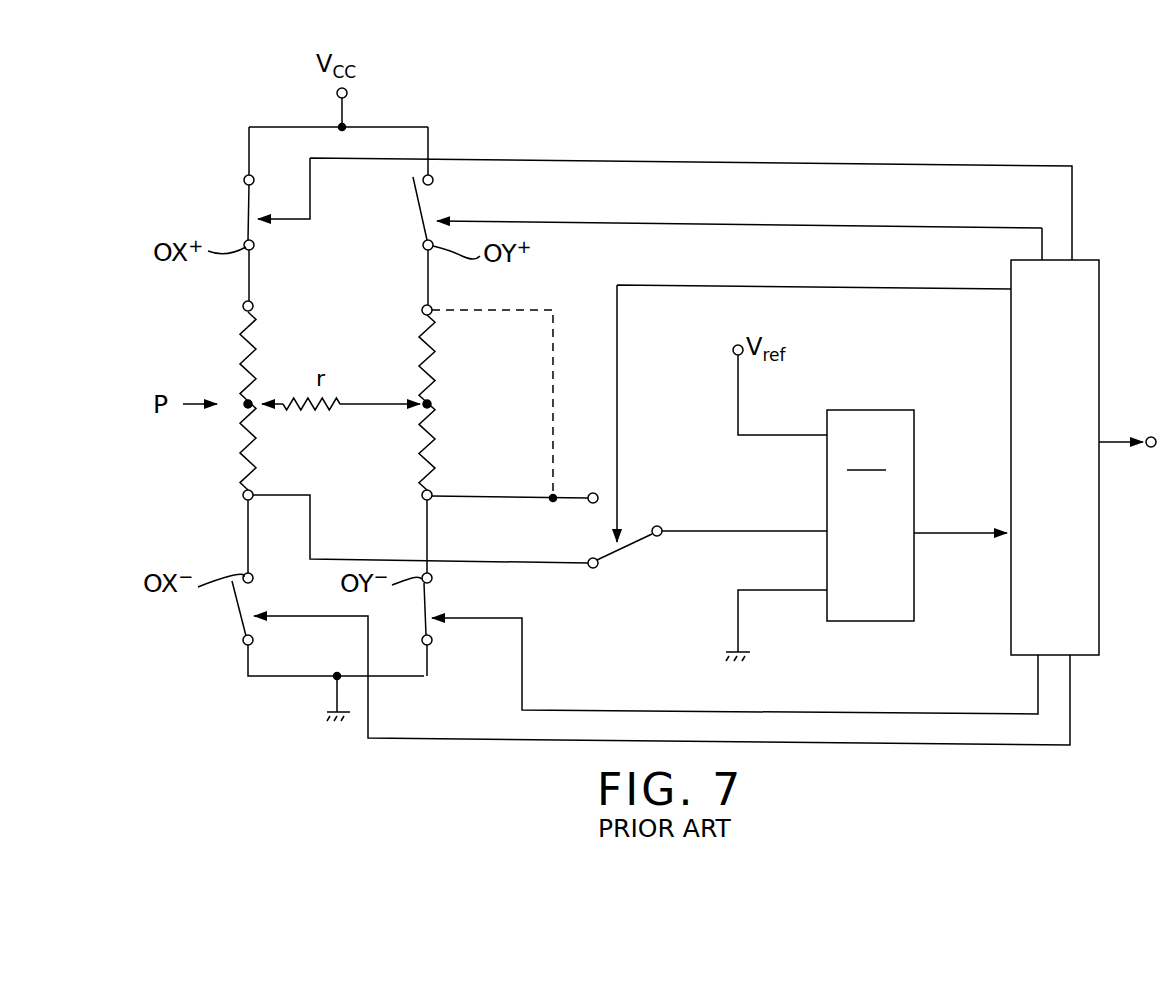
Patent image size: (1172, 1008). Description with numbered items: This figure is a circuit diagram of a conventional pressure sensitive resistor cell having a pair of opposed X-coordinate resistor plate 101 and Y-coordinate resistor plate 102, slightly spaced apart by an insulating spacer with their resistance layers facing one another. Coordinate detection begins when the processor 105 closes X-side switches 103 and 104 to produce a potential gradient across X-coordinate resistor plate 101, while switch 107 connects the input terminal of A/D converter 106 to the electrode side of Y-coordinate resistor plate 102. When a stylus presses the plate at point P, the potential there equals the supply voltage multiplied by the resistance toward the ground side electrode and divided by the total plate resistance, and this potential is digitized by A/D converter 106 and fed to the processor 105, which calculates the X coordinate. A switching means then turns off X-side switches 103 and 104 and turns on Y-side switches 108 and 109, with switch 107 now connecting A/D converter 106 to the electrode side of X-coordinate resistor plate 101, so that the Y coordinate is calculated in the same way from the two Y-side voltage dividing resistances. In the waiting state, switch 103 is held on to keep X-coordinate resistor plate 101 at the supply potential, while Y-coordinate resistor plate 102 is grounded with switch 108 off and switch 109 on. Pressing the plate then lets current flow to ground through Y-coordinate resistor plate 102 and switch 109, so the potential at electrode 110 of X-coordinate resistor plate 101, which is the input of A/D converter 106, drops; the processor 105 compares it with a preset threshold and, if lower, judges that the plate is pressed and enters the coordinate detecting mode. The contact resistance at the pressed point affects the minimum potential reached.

The X-coordinate resistor plate 101 is at (248, 424).
The Y-coordinate resistor plate 102 is at (413, 348).
The X-side switch 103 is at (248, 207).
The X-side switch 104 is at (238, 606).
The CPU 105 is at (1082, 476).
The A/D converter 106 is at (895, 546).
The switch 107 is at (630, 545).
The Y-side switch 108 is at (418, 198).
The Y-side switch 109 is at (424, 600).
The electrode 110 is at (246, 498).